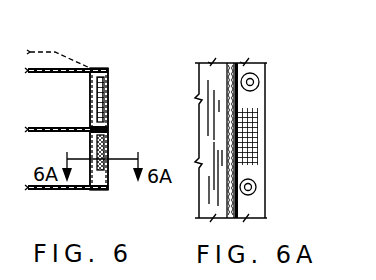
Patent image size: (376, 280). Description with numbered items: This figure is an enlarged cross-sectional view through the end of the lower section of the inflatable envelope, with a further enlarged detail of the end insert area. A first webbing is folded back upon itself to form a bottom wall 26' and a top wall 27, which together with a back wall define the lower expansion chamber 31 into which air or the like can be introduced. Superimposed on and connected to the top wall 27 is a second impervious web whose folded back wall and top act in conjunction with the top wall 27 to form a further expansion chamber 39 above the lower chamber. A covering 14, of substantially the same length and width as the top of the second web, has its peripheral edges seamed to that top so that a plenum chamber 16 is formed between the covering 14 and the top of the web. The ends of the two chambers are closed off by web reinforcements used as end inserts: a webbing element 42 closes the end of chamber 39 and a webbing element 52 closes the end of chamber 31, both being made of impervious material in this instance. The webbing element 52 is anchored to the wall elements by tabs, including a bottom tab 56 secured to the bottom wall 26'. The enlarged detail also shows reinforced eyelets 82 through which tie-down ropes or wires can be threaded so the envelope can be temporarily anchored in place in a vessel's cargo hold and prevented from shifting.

In FIG. 6, the covering 14 is at (60, 51).
In FIG. 6, the plenum chamber 16 is at (52, 62).
In FIG. 6, the expansion chamber 39 is at (57, 97).
In FIG. 6, the top wall 27 is at (70, 131).
In FIG. 6, the expansion chamber 31 is at (76, 172).
In FIG. 6, the bottom wall 26' is at (106, 144).
In FIG. 6A, the bottom wall 26' is at (191, 140).
In FIG. 6, the reinforcing webbing element 42 is at (106, 90).
In FIG. 6, the webbing element 52 is at (106, 151).
In FIG. 6A, the webbing element 52 is at (230, 82).
In FIG. 6A, the bottom tab 56 is at (248, 136).
In FIG. 6A, the reinforced eyelet 82 is at (259, 75).